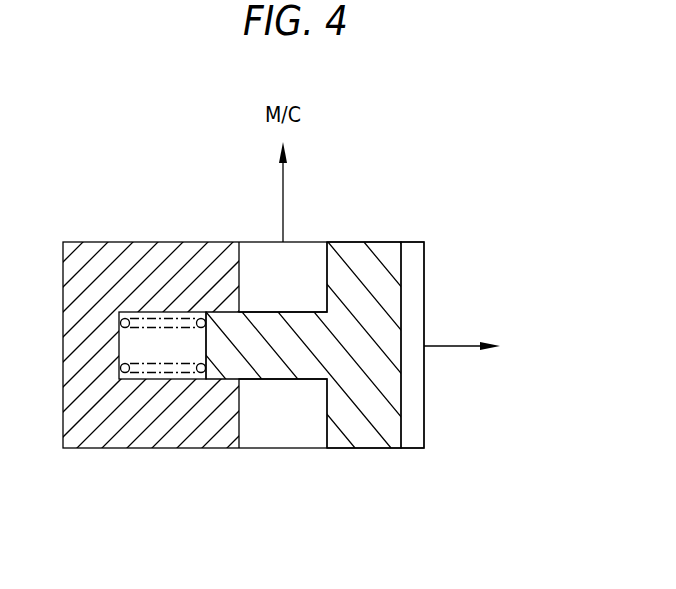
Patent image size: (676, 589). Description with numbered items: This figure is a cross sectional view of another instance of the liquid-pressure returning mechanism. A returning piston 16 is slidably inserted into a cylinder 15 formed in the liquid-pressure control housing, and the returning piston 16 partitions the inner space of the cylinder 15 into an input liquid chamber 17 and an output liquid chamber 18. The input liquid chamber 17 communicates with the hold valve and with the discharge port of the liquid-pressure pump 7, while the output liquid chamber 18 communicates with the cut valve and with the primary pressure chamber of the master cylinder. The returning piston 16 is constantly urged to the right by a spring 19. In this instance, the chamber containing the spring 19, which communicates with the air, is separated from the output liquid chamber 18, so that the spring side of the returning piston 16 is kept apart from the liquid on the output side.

The liquid-pressure pump 7 is at (472, 347).
The cylinder 15 is at (259, 242).
The returning piston 16 is at (374, 268).
The input liquid chamber 17 is at (410, 437).
The output liquid chamber 18 is at (277, 437).
The spring 19 is at (142, 372).